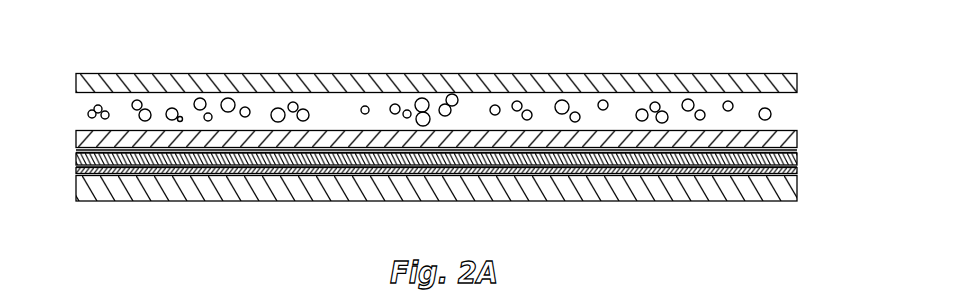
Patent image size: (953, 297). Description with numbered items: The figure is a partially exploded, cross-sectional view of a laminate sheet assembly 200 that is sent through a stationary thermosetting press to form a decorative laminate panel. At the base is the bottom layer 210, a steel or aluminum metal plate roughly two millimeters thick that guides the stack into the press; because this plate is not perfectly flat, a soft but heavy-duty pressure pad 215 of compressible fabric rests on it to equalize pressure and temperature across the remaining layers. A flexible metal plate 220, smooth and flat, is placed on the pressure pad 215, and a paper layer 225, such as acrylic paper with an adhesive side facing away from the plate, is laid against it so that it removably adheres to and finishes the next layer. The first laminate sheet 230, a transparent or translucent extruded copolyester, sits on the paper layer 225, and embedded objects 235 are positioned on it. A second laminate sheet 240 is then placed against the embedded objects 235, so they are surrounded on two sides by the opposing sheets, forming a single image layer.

The laminate sheet assembly 200 is at (805, 74).
The bottom layer 210 is at (157, 197).
The pressure pad 215 is at (102, 171).
The flexible metal plate 220 is at (76, 161).
The paper layer 225 is at (80, 150).
The first laminate sheet 230 is at (92, 137).
The embedded objects 235 is at (198, 98).
The second laminate sheet 240 is at (111, 73).